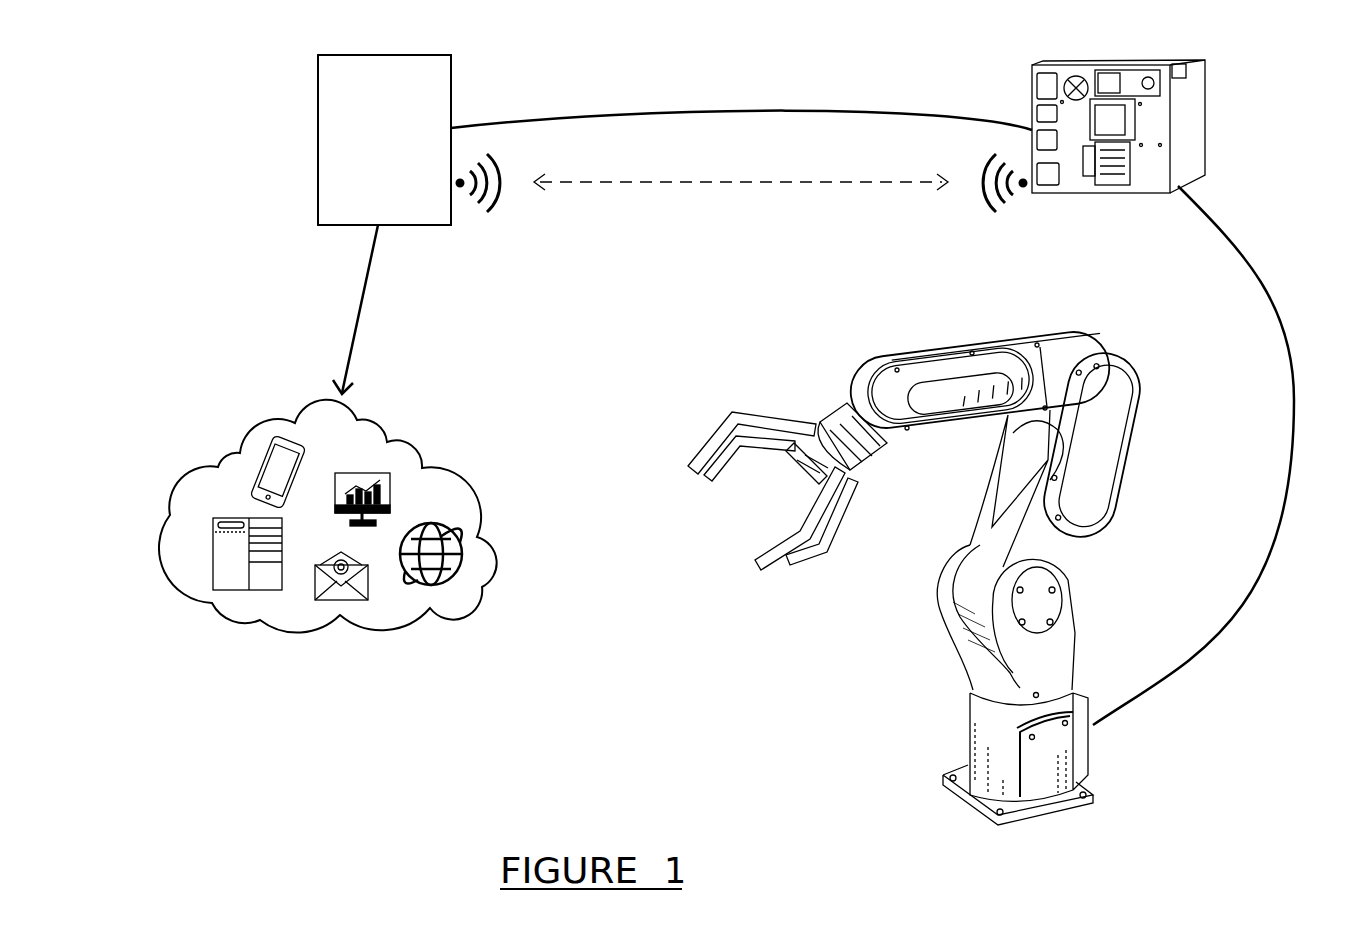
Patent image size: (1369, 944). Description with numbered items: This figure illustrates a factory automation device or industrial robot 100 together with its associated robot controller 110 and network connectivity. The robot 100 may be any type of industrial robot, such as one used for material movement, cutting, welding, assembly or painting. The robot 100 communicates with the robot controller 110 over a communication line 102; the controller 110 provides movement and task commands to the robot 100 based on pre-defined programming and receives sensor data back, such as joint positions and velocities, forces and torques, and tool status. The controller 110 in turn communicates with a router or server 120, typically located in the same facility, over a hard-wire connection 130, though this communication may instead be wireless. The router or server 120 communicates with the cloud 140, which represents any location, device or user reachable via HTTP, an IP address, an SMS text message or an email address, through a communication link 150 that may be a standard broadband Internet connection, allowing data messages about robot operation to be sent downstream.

The industrial robot 100 is at (876, 336).
The communication line 102 is at (1210, 638).
The robot controller 110 is at (1032, 65).
The router or server 120 is at (452, 98).
The hard-wire connection 130 is at (750, 110).
The cloud 140 is at (246, 628).
The communication link 150 is at (360, 297).